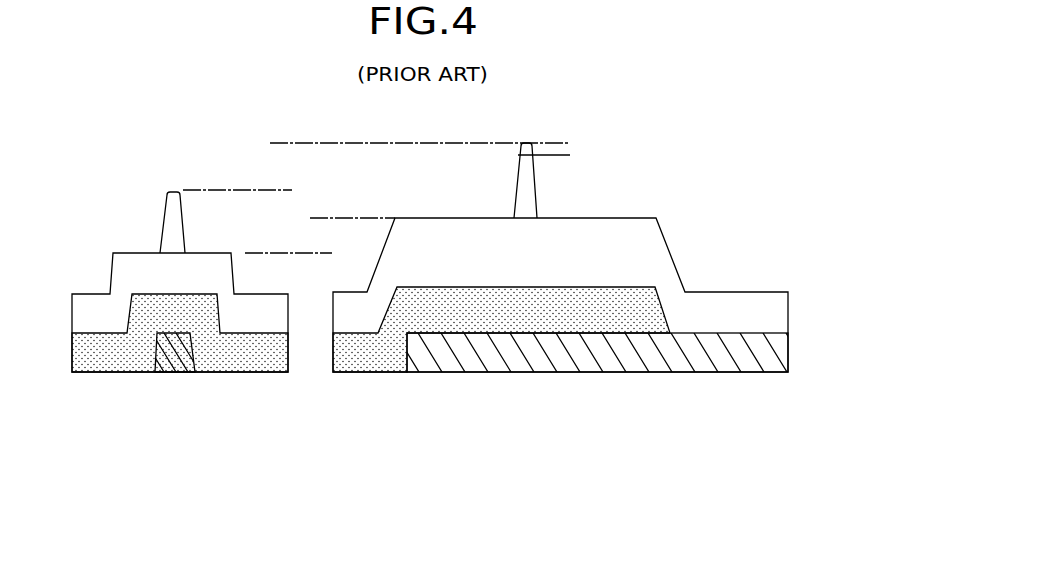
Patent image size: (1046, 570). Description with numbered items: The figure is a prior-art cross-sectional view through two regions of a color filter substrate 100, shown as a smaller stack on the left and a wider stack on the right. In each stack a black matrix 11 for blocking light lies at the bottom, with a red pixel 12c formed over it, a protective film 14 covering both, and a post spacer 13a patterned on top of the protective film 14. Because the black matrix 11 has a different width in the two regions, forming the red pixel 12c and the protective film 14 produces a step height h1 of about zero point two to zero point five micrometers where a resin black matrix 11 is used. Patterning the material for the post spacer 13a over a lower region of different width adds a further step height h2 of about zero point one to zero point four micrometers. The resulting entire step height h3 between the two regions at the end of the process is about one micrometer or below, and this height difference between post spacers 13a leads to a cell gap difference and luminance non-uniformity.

The color filter substrate 100 is at (645, 128).
The black matrix 11 is at (178, 363).
The red pixel 12c is at (103, 372).
The post spacer 13a is at (170, 211).
The protective film 14 is at (260, 322).
The step height h1 is at (320, 183).
The step height h2 is at (560, 155).
The entire step height h3 is at (282, 108).